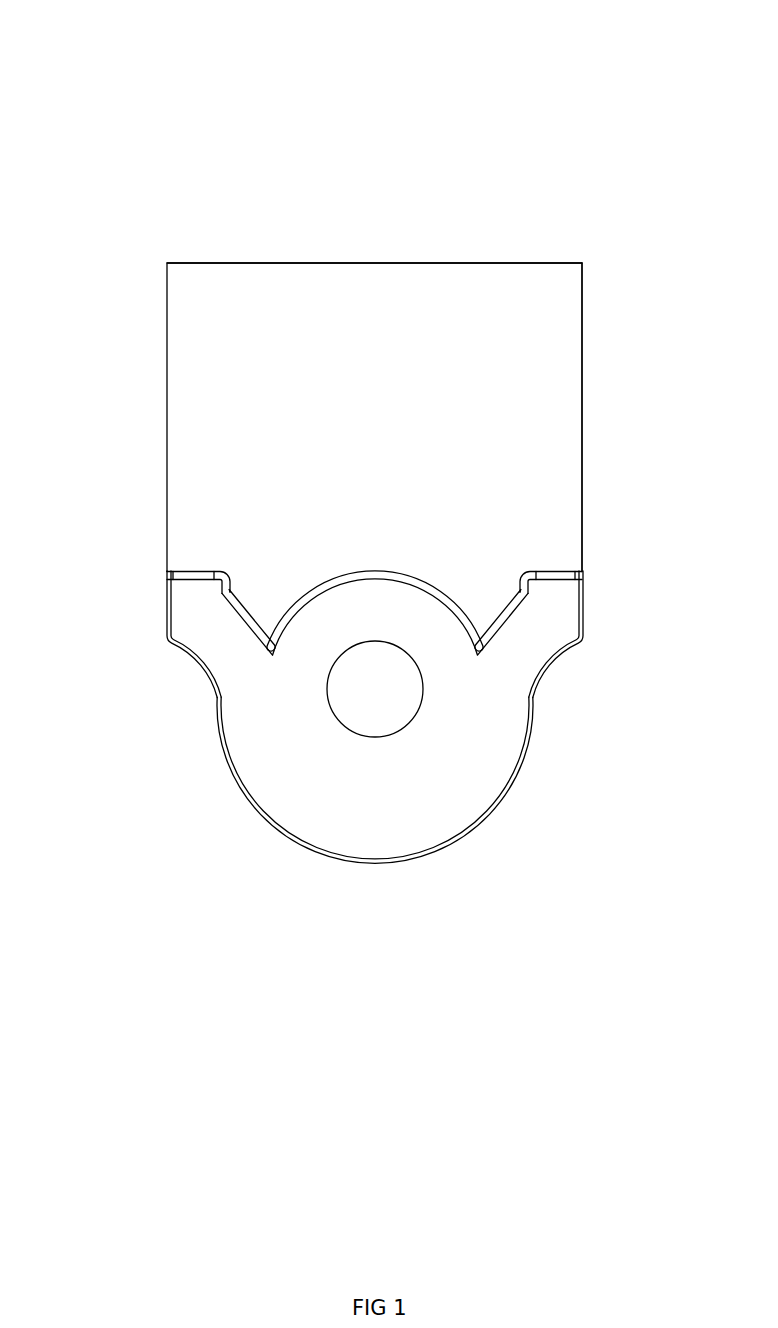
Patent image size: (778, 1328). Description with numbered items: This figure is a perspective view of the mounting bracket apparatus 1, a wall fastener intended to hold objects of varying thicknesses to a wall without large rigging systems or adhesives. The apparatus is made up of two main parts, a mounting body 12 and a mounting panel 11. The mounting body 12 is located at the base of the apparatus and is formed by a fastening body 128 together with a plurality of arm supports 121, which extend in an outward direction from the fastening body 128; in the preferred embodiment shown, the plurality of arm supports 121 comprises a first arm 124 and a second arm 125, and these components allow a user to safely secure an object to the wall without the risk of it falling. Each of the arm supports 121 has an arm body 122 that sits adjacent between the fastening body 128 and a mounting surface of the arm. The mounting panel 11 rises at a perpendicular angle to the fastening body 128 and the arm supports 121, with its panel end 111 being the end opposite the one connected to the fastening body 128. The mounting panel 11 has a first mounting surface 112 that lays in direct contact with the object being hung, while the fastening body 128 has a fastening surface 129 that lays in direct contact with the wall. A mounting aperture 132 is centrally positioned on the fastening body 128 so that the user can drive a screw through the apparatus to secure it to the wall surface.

The mounting bracket apparatus 1 is at (204, 80).
The mounting panel 11 is at (140, 355).
The panel end 111 is at (322, 250).
The first mounting surface 112 is at (564, 325).
The mounting body 12 is at (168, 786).
The plurality of arm supports 121 is at (151, 662).
The arm body 122 is at (525, 637).
The first arm 124 is at (188, 557).
The second arm 125 is at (575, 557).
The fastening body 128 is at (312, 868).
The fastening surface 129 is at (466, 821).
The mounting aperture 132 is at (381, 737).